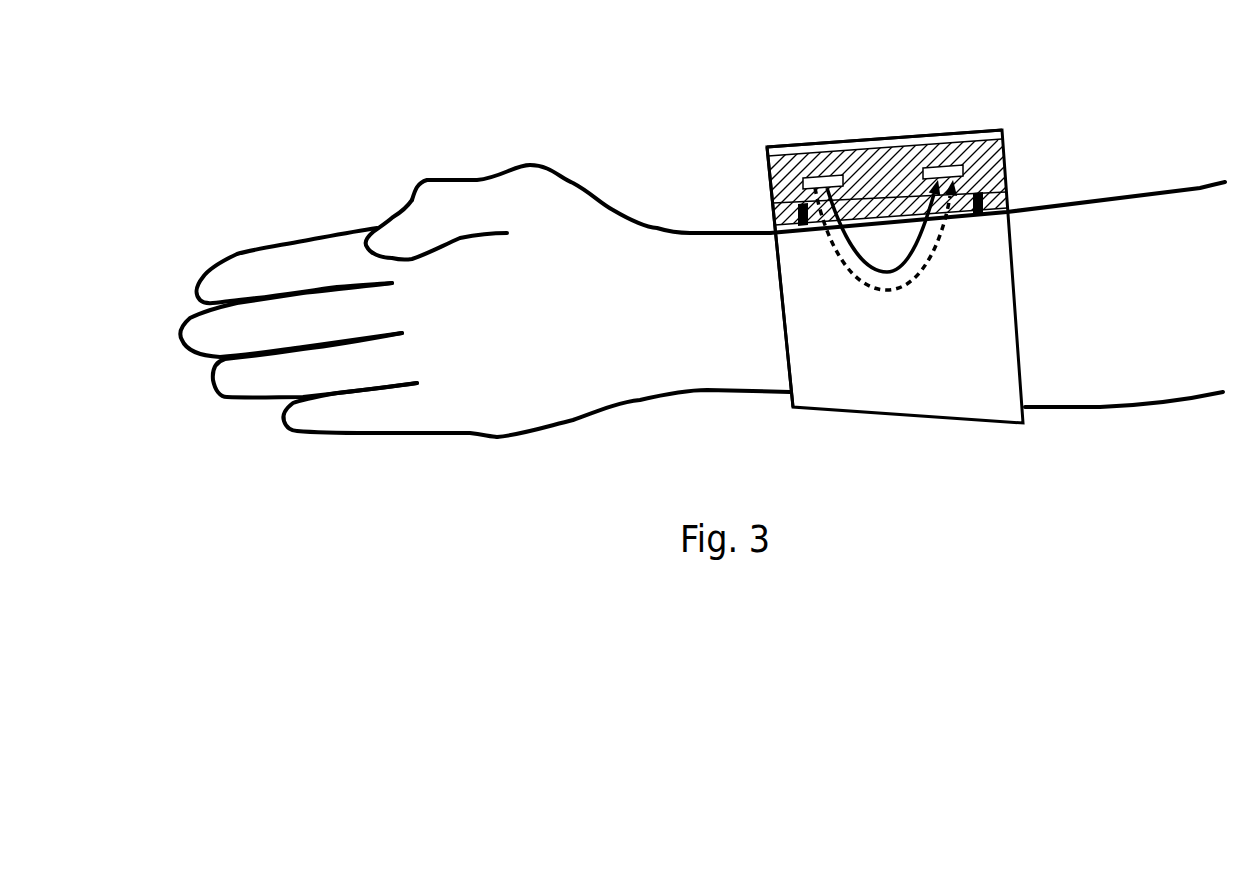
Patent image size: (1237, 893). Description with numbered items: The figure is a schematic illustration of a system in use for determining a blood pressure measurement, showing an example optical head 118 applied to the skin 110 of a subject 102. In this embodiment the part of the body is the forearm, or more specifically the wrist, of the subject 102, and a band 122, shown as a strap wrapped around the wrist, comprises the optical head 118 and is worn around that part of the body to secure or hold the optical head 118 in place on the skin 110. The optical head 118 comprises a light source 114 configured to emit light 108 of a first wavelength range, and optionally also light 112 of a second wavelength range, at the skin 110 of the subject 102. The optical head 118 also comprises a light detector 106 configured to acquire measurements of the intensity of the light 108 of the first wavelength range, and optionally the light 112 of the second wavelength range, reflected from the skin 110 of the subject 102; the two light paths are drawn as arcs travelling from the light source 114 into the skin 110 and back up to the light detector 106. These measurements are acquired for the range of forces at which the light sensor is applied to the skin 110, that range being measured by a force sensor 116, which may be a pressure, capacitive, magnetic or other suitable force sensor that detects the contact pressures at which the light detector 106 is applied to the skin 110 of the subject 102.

The subject 102 is at (487, 173).
The light detector 106 is at (953, 147).
The light of the first wavelength range 108 is at (883, 226).
The skin 110 is at (1110, 271).
The light of the second wavelength range 112 is at (886, 237).
The light source 114 is at (843, 152).
The force sensor 116 is at (1007, 195).
The optical head 118 is at (770, 177).
The band 122 is at (990, 422).